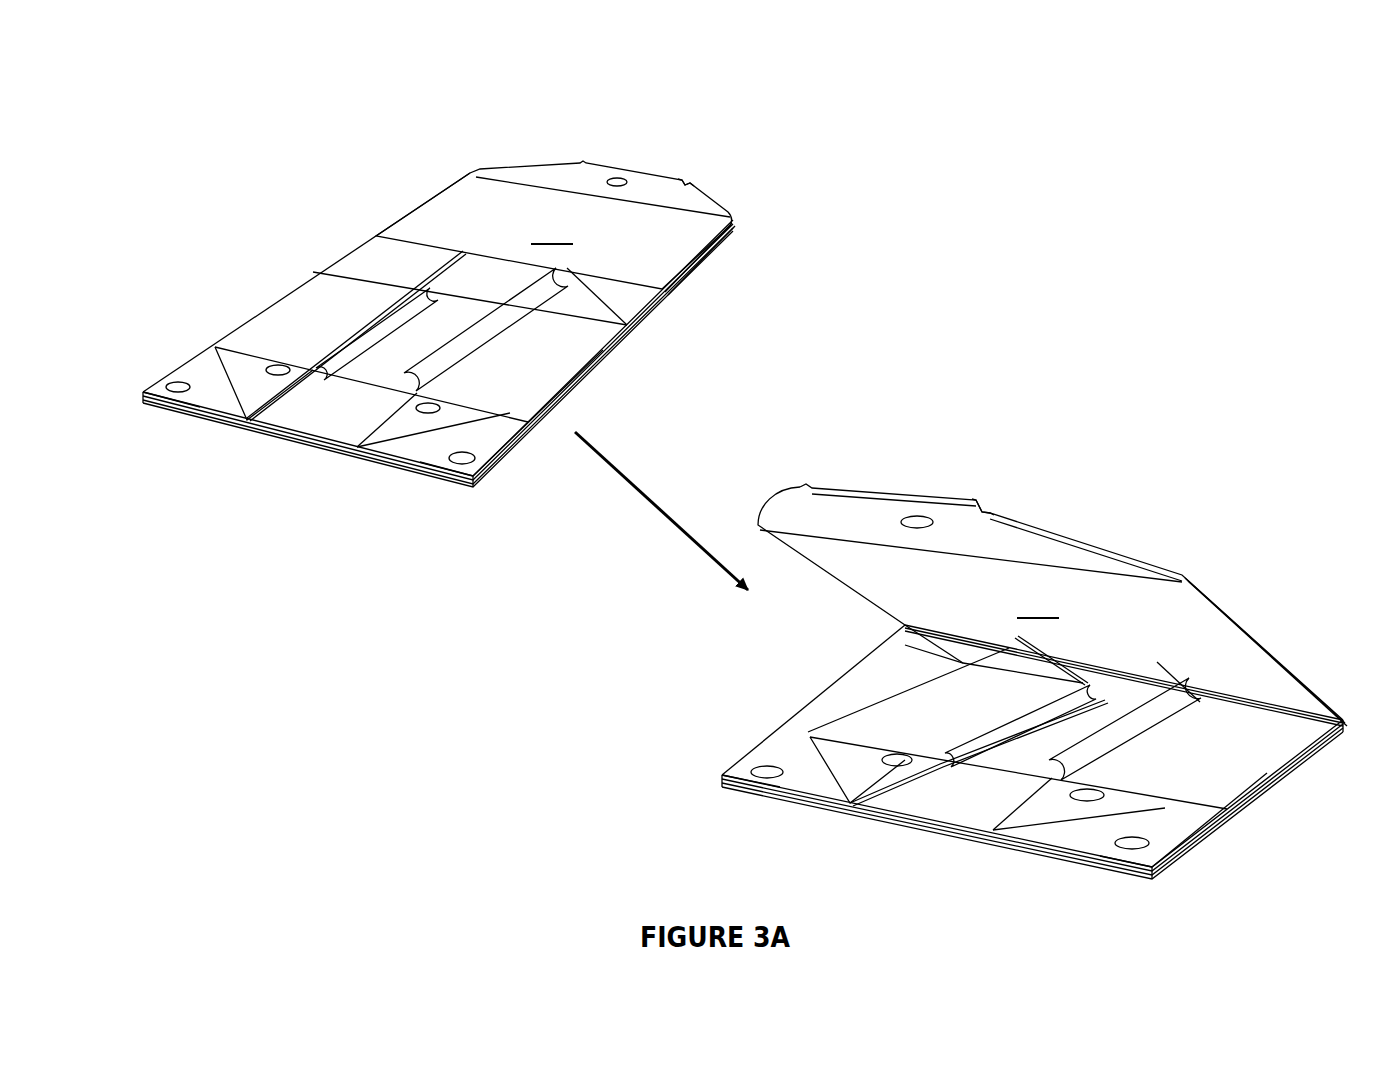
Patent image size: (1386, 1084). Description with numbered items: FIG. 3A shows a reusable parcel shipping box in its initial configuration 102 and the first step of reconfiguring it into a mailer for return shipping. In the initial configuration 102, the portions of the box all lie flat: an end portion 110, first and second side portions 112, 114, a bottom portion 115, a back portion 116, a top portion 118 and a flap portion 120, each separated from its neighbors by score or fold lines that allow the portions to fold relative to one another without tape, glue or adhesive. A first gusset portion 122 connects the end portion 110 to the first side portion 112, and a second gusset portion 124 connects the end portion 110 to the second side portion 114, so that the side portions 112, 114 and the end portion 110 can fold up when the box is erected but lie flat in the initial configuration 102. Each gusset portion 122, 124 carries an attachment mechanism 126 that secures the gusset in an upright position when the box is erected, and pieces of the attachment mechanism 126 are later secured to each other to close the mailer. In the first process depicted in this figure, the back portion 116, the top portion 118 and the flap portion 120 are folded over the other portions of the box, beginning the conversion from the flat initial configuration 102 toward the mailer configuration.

The initial configuration 102 is at (221, 170).
The end portion 110 is at (317, 430).
The first side portion 112 is at (276, 303).
The second side portion 114 is at (570, 373).
The bottom portion 115 is at (433, 337).
The back portion 116 is at (495, 275).
The top portion 118 is at (861, 443).
The flap portion 120 is at (657, 197).
The first gusset portion 122 is at (200, 433).
The second gusset portion 124 is at (440, 497).
The attachment mechanism 126 is at (617, 180).